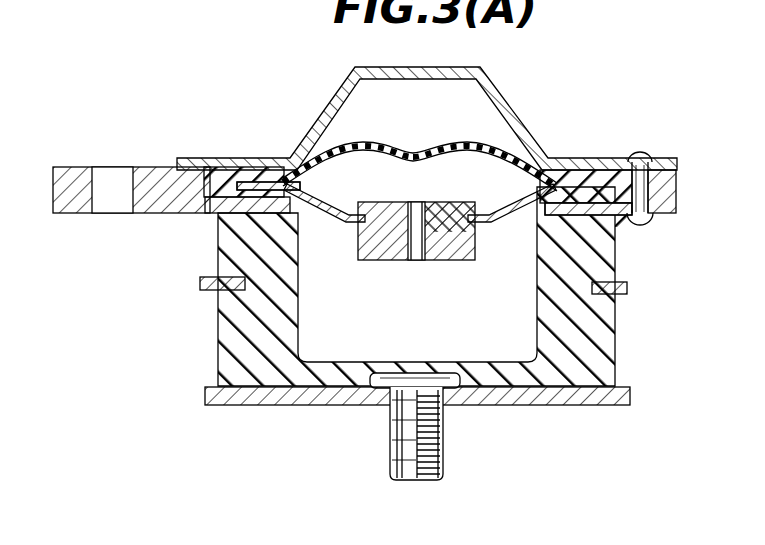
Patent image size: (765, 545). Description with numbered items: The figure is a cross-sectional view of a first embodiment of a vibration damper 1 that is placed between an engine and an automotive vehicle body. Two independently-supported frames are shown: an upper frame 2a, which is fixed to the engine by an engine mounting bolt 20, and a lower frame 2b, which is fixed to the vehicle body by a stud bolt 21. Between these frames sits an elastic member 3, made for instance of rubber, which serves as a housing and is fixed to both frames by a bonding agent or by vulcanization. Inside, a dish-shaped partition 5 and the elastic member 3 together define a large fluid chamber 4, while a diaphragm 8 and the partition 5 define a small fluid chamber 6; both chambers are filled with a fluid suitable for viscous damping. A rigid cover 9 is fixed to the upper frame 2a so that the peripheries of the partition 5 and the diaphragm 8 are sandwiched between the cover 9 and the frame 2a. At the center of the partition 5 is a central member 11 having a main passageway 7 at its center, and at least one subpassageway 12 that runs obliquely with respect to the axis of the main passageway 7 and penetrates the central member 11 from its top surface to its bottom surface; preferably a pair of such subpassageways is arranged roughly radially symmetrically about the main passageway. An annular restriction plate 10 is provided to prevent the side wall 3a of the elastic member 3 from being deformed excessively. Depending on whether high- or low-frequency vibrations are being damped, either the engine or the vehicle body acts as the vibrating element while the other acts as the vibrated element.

The vibration damper 1 is at (568, 115).
The upper frame 2a is at (664, 214).
The lower frame 2b is at (624, 405).
The elastic member 3 is at (598, 333).
The side wall of elastic member 3a is at (573, 262).
The large fluid chamber 4 is at (506, 348).
The dish-shaped partition 5 is at (340, 213).
The small fluid chamber 6 is at (464, 157).
The main passageway 7 is at (414, 208).
The diaphragm 8 is at (350, 146).
The rigid cover 9 is at (332, 105).
The annular restriction plate 10 is at (628, 289).
The central member 11 is at (478, 246).
The subpassageway 12 is at (450, 210).
The engine mounting bolt 20 is at (640, 150).
The stud bolt 21 is at (441, 479).